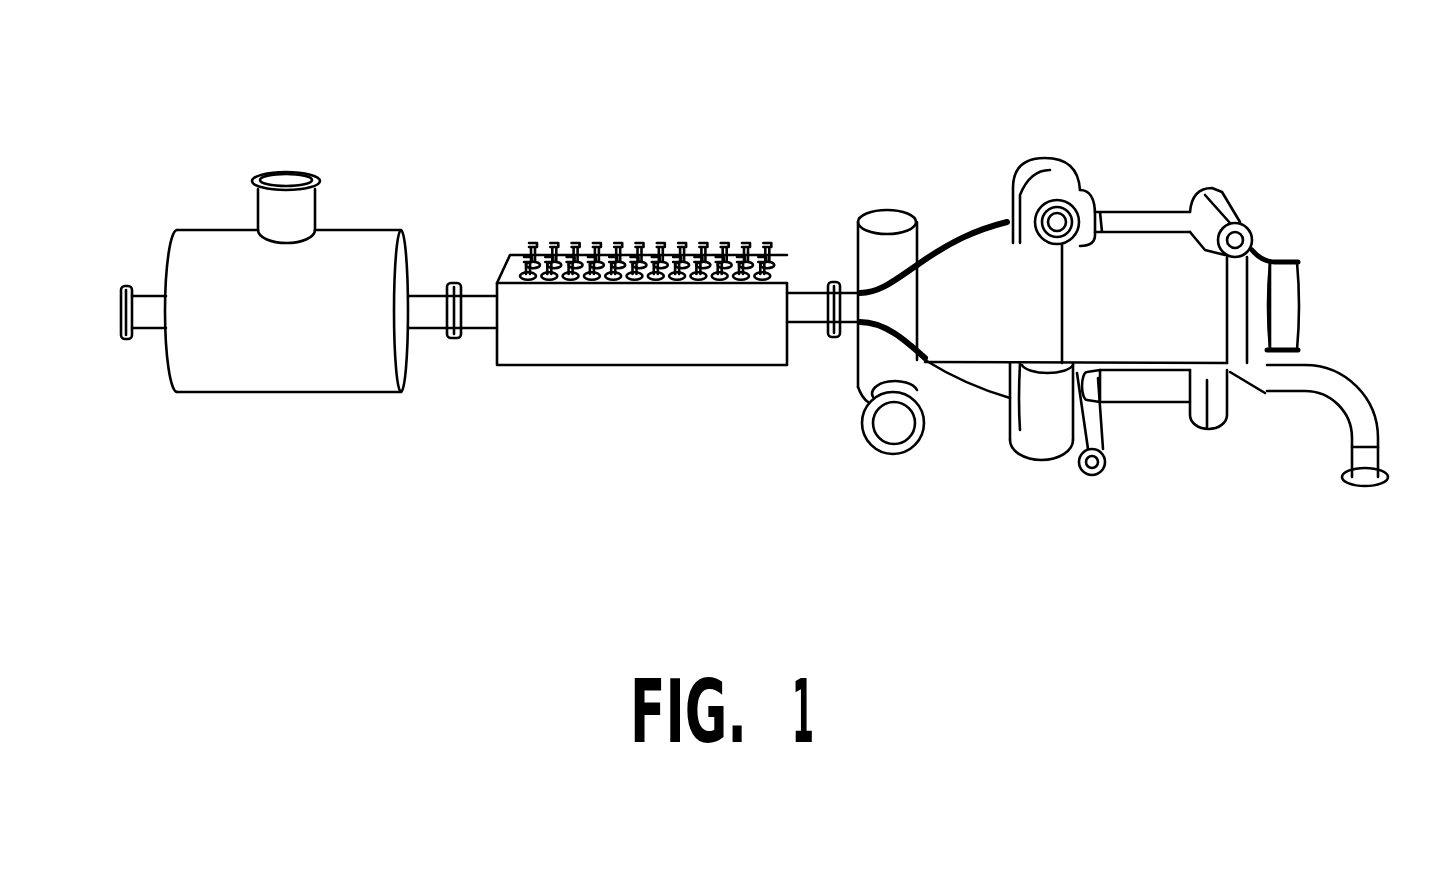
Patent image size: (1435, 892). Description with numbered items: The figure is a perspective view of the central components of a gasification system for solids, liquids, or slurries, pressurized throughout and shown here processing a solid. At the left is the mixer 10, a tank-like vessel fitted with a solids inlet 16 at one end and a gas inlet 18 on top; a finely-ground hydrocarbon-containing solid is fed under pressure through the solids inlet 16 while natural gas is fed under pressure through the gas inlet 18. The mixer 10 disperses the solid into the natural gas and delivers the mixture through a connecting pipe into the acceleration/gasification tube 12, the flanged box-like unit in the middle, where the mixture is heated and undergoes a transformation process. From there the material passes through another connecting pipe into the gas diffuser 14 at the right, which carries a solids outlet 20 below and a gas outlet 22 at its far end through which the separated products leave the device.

The mixer 10 is at (290, 373).
The acceleration/gasification tube 12 is at (580, 348).
The gas diffuser 14 is at (972, 263).
The solids inlet 16 is at (126, 285).
The gas inlet 18 is at (267, 173).
The solids outlet 20 is at (1302, 392).
The gas outlet 22 is at (1303, 295).